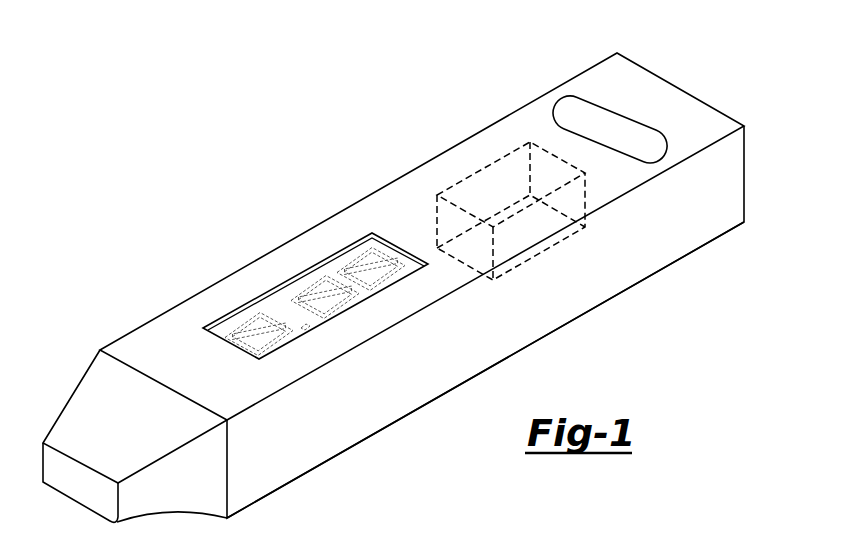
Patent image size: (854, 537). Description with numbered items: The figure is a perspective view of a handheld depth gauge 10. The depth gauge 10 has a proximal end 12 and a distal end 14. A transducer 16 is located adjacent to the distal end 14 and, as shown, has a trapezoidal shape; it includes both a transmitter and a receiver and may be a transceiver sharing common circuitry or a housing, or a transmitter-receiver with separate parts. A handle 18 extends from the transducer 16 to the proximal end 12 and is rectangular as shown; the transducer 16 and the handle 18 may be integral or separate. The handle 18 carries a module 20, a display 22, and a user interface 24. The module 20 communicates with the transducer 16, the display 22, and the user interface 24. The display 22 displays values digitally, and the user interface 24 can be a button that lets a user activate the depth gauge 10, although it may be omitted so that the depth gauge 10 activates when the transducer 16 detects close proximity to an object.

The depth gauge 10 is at (283, 140).
The proximal end 12 is at (744, 155).
The distal end 14 is at (95, 498).
The transducer 16 is at (80, 428).
The handle 18 is at (625, 275).
The module 20 is at (478, 183).
The display 22 is at (327, 272).
The user interface 24 is at (573, 113).